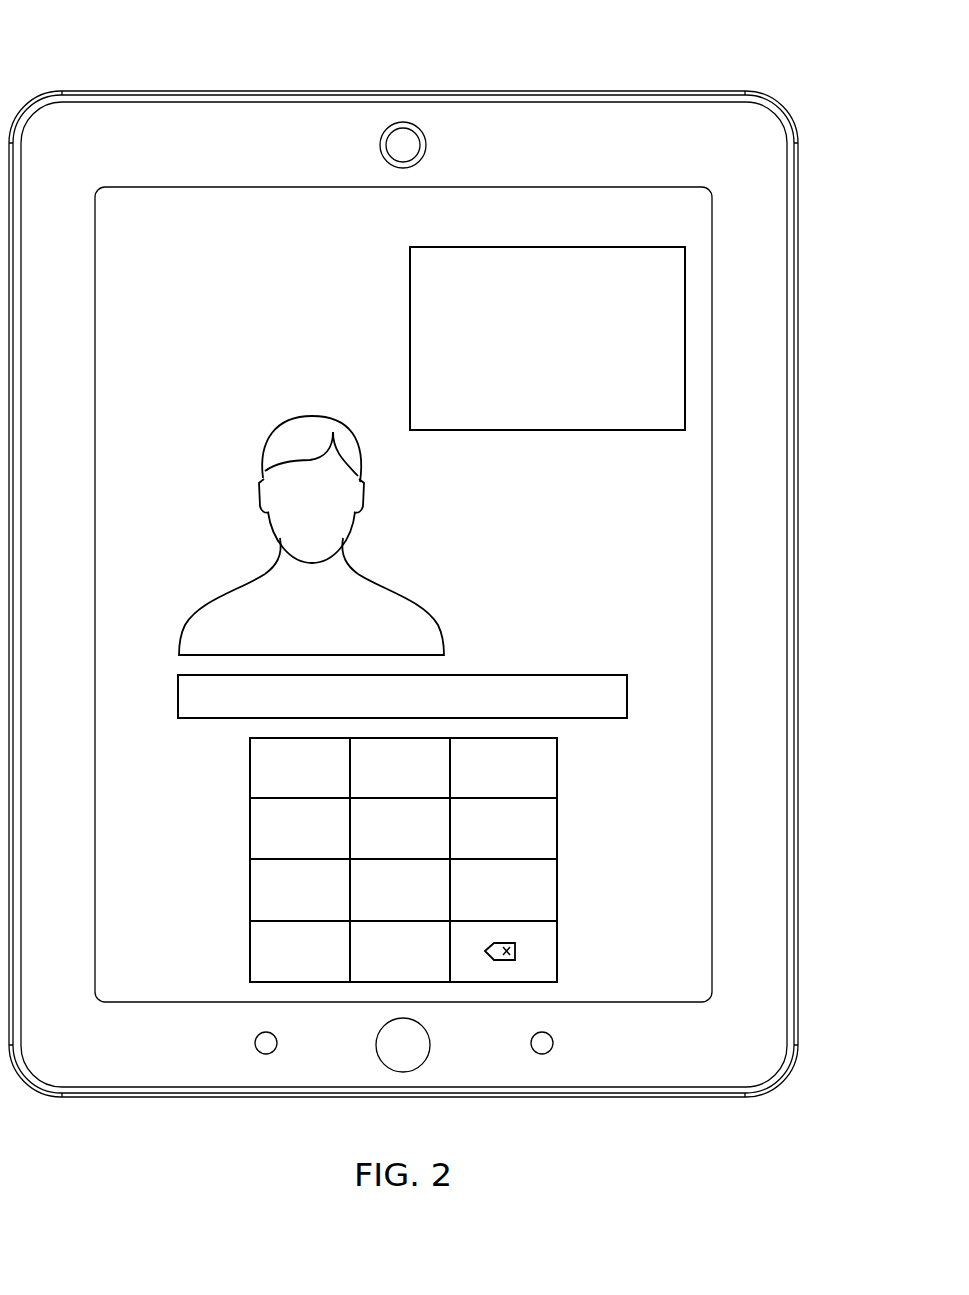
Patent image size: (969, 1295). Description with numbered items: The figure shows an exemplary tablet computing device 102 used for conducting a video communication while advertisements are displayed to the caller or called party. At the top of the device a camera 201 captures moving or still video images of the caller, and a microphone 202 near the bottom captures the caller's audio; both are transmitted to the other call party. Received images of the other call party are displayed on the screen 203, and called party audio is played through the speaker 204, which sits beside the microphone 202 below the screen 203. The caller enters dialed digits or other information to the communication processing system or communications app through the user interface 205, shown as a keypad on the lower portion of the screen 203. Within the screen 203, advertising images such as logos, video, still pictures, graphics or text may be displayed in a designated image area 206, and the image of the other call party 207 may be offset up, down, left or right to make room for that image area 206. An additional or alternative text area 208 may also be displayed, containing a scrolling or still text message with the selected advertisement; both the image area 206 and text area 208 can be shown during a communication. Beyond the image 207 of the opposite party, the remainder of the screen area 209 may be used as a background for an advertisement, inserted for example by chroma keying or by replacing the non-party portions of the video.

The tablet computing device 102 is at (229, 92).
The camera 201 is at (402, 122).
The microphone 202 is at (541, 1055).
The screen 203 is at (267, 304).
The speaker 204 is at (264, 1055).
The user interface 205 is at (231, 879).
The designated image area 206 is at (545, 247).
The image of the other call party 207 is at (283, 425).
The text area 208 is at (580, 719).
The remainder of the screen area 209 is at (143, 414).